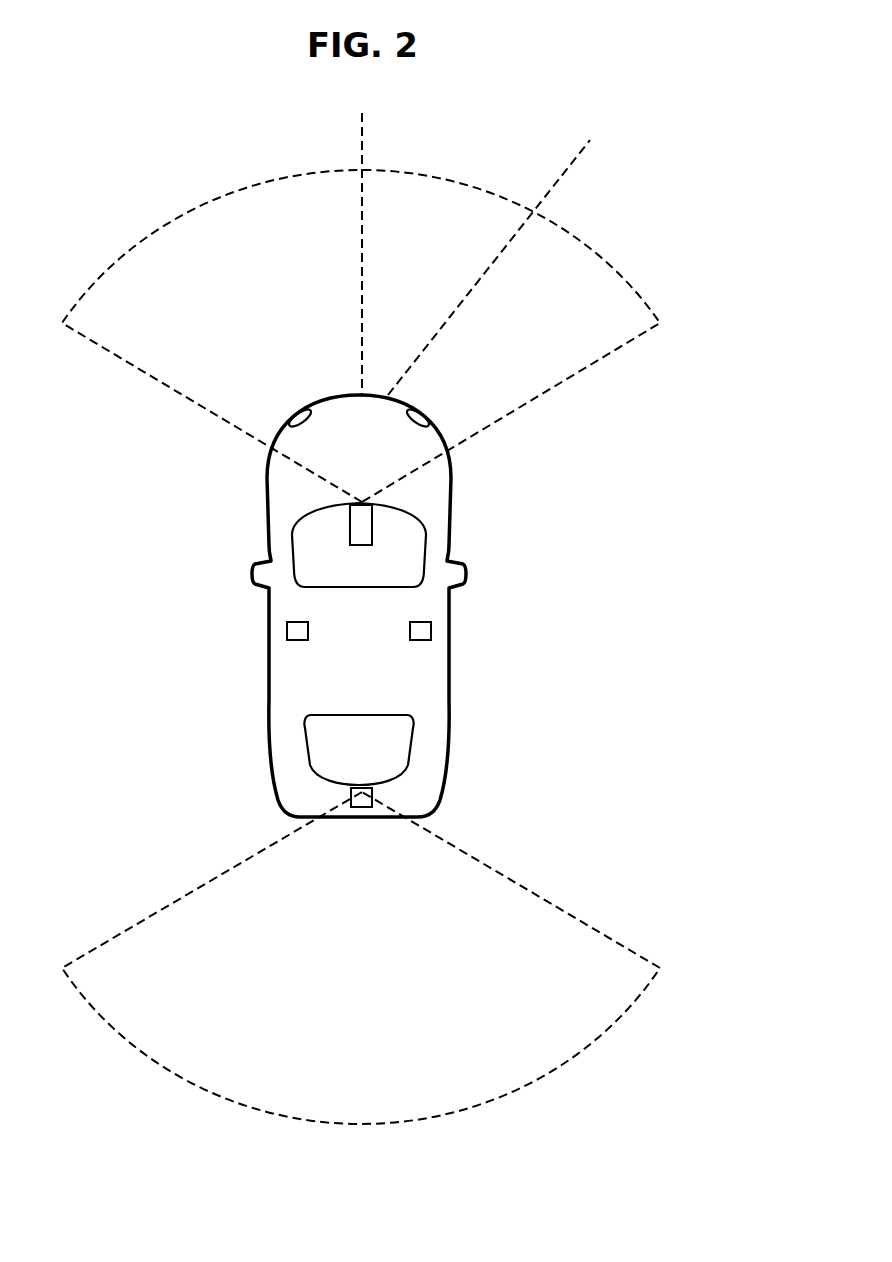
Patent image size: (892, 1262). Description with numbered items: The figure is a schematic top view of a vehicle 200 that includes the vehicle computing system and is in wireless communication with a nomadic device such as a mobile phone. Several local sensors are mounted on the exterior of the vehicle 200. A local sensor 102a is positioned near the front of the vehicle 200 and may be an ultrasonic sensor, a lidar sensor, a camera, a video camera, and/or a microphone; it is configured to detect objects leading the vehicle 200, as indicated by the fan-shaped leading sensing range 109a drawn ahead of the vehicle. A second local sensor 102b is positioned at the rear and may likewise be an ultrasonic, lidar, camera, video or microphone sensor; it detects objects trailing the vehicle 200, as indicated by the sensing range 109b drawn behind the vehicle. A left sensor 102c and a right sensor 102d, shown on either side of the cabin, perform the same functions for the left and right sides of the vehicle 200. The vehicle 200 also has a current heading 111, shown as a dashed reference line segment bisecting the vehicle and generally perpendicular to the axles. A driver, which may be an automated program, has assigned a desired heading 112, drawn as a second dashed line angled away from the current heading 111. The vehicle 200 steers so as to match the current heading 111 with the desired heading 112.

The vehicle 200 is at (718, 152).
The current heading 111 is at (362, 318).
The desired heading 112 is at (450, 317).
The leading sensing range 109a is at (538, 398).
The leading sensing range 109b is at (540, 896).
The local sensor 102a is at (360, 530).
The local sensor 102b is at (362, 808).
The left sensor 102c is at (298, 630).
The right sensor 102d is at (424, 630).